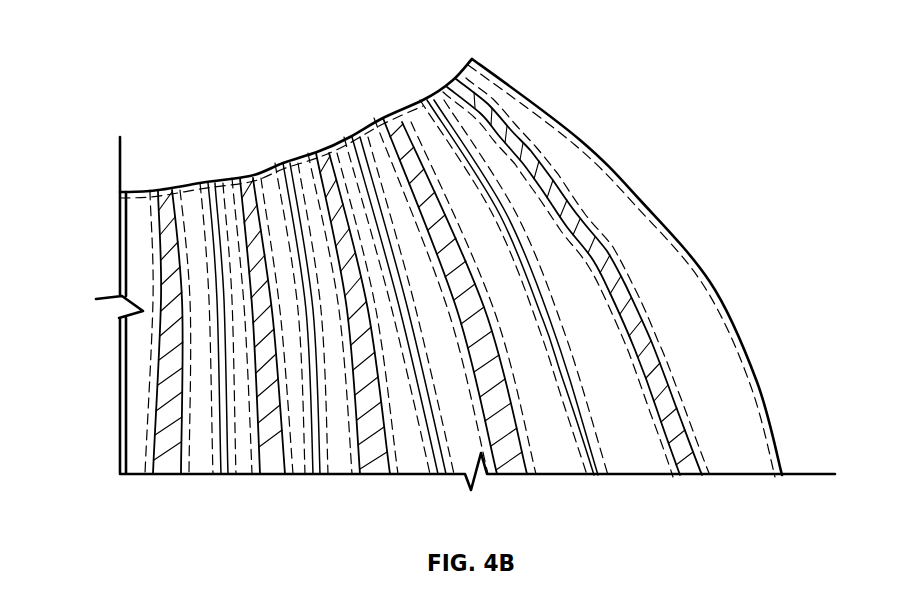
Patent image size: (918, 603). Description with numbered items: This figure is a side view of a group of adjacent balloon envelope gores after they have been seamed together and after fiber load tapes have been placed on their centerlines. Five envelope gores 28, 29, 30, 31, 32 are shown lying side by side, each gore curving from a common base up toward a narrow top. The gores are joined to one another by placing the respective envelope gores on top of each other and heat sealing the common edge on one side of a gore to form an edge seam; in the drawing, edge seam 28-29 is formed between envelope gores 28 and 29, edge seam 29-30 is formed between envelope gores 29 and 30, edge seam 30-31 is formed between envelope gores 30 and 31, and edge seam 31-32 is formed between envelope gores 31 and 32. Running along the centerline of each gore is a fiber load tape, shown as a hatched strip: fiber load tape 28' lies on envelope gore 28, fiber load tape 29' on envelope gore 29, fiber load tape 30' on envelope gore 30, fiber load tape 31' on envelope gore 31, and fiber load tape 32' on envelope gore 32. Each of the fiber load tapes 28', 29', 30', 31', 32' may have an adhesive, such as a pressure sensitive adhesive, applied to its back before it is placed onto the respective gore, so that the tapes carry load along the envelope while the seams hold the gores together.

The envelope gore 28 is at (99, 245).
The fiber load tape 28' is at (127, 332).
The envelope gore 29 is at (213, 310).
The fiber load tape 29' is at (251, 291).
The envelope gore 30 is at (288, 298).
The fiber load tape 30' is at (340, 279).
The envelope gore 31 is at (385, 285).
The fiber load tape 31' is at (445, 264).
The envelope gore 32 is at (499, 263).
The fiber load tape 32' is at (566, 244).
The edge seam 28-29 is at (223, 461).
The edge seam 29-30 is at (318, 461).
The edge seam 30-31 is at (437, 461).
The edge seam 31-32 is at (594, 458).